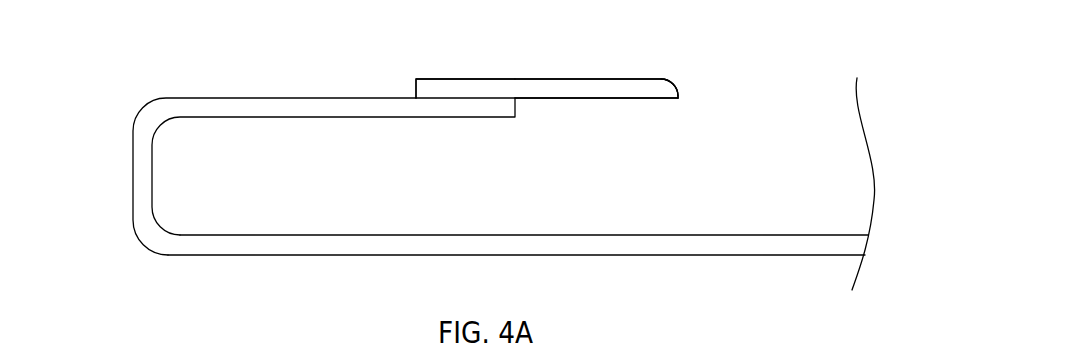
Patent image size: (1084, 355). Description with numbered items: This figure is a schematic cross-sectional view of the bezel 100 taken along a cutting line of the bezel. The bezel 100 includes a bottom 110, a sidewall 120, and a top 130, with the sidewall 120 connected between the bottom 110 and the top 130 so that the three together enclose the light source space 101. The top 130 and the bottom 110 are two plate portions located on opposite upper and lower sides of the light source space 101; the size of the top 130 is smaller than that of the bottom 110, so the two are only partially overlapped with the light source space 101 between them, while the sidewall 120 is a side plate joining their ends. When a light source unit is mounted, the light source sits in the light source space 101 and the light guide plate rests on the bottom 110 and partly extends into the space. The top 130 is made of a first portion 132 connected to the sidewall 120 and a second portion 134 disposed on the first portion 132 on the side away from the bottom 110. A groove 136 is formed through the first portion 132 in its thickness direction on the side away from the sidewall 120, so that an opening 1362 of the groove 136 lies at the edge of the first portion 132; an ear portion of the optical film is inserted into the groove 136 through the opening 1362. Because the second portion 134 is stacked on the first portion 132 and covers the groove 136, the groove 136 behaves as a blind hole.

The bezel 100 is at (147, 63).
The bottom 110 is at (717, 245).
The sidewall 120 is at (141, 161).
The light source space 101 is at (170, 203).
The top 130 is at (632, 33).
The first portion 132 is at (498, 108).
The second portion 134 is at (610, 90).
The groove 136 is at (577, 110).
The opening 1362 is at (677, 106).